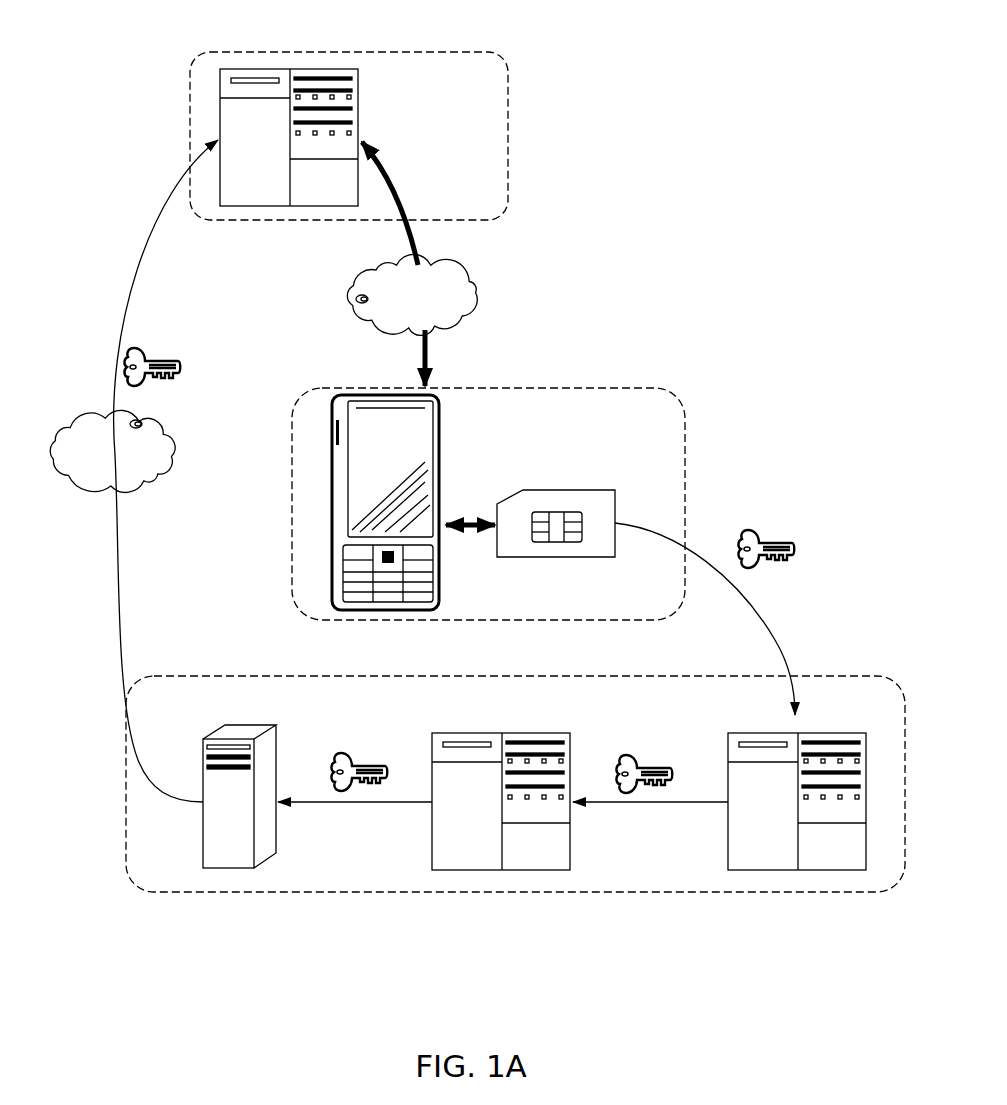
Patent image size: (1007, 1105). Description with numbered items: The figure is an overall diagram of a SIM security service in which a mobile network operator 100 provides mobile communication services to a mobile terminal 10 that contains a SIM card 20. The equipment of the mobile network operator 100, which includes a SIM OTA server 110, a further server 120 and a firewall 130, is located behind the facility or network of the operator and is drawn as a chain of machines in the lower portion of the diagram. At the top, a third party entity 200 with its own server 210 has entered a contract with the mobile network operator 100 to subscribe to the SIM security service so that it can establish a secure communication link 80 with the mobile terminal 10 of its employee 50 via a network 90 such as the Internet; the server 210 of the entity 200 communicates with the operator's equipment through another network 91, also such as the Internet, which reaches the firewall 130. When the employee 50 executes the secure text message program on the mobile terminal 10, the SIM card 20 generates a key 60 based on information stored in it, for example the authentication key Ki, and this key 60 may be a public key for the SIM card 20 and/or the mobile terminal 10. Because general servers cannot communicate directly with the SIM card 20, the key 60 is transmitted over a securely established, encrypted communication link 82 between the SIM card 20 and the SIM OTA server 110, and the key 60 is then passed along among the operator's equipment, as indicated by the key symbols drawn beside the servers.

The mobile terminal 10 is at (460, 480).
The SIM card 20 is at (603, 478).
The employee 50 is at (690, 393).
The key 60 is at (173, 358).
The secure communication link 80 is at (421, 237).
The communication link 82 is at (773, 630).
The network 90 is at (475, 305).
The network 91 is at (87, 493).
The mobile network operator 100 is at (237, 675).
The SIM OTA server 110 is at (817, 878).
The server 120 is at (525, 878).
The firewall 130 is at (235, 874).
The third party entity 200 is at (513, 80).
The server 210 is at (370, 65).